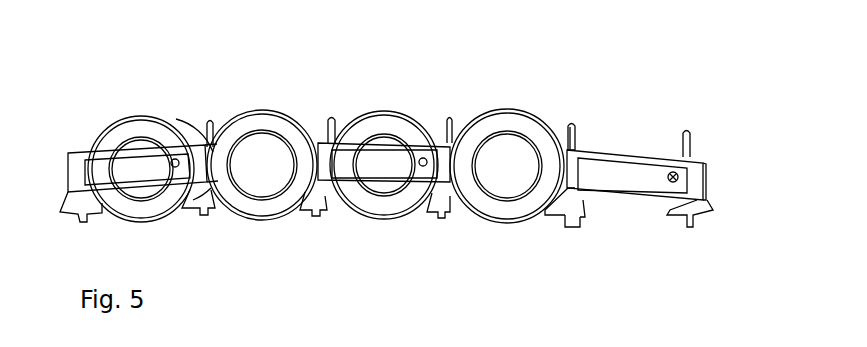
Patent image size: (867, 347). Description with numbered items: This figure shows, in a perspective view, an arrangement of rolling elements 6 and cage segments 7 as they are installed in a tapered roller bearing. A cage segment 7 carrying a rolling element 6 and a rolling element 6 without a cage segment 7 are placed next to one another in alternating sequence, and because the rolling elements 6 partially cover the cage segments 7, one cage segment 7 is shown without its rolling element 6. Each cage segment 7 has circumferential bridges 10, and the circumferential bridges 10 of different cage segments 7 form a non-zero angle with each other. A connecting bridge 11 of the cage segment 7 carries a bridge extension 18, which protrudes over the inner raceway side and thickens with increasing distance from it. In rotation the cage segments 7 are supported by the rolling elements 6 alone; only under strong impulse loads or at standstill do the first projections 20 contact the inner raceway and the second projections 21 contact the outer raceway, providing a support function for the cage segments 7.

The rolling element 6 is at (503, 115).
The cage segment 7 is at (636, 134).
The circumferential bridge 10 is at (663, 158).
The connecting bridge 11 is at (703, 163).
The bridge extension 18 is at (578, 212).
The first projection 20 is at (565, 217).
The second projection 21 is at (570, 127).